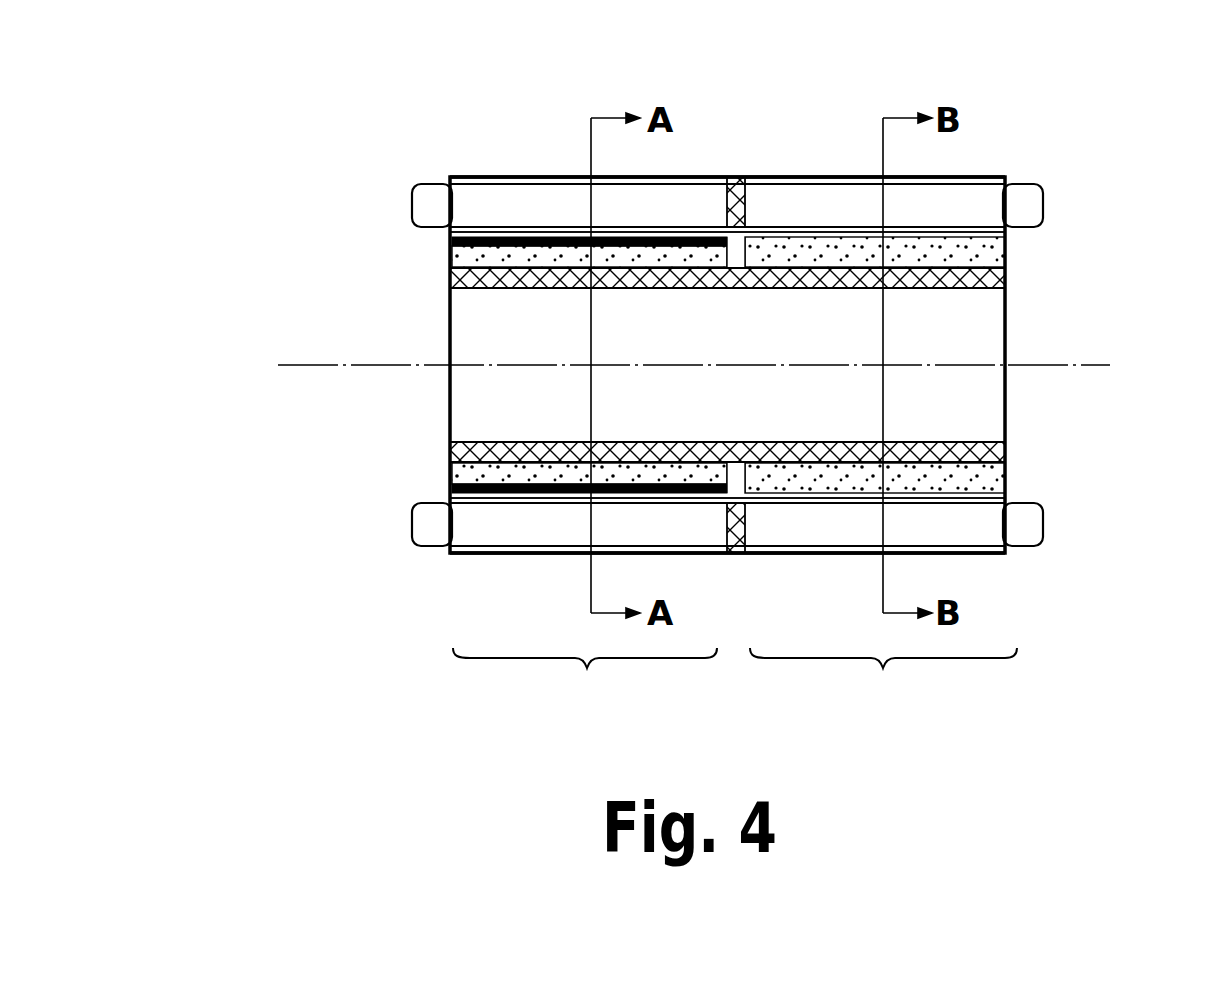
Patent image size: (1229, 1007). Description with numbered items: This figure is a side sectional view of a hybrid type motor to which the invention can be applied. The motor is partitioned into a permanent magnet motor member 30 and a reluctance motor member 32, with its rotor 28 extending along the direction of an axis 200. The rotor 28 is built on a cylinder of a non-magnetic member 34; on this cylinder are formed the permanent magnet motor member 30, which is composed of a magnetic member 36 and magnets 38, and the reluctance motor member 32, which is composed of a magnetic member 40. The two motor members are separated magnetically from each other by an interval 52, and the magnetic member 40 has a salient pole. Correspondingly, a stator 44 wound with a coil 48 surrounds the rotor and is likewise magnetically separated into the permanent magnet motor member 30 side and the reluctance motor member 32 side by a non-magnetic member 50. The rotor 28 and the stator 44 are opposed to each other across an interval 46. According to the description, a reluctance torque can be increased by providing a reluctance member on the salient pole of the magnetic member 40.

The rotor 28 is at (593, 373).
The permanent magnet motor member 30 is at (585, 680).
The reluctance motor member 32 is at (883, 680).
The non-magnetic member 34 is at (450, 445).
The magnetic member 36 is at (450, 258).
The magnets 38 is at (518, 373).
The magnetic member 40 is at (1005, 257).
The stator 44 is at (450, 180).
The interval 46 is at (1005, 237).
The coil 48 is at (413, 197).
The non-magnetic member 50 is at (742, 177).
The interval 52 is at (736, 250).
The axis 200 is at (1085, 367).